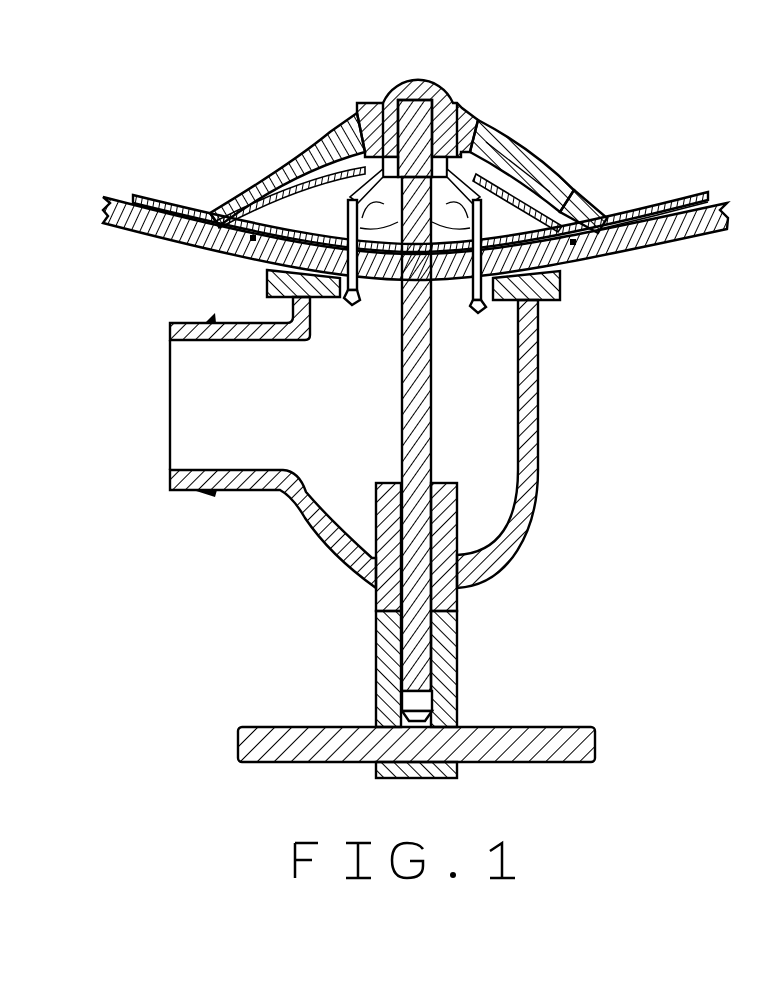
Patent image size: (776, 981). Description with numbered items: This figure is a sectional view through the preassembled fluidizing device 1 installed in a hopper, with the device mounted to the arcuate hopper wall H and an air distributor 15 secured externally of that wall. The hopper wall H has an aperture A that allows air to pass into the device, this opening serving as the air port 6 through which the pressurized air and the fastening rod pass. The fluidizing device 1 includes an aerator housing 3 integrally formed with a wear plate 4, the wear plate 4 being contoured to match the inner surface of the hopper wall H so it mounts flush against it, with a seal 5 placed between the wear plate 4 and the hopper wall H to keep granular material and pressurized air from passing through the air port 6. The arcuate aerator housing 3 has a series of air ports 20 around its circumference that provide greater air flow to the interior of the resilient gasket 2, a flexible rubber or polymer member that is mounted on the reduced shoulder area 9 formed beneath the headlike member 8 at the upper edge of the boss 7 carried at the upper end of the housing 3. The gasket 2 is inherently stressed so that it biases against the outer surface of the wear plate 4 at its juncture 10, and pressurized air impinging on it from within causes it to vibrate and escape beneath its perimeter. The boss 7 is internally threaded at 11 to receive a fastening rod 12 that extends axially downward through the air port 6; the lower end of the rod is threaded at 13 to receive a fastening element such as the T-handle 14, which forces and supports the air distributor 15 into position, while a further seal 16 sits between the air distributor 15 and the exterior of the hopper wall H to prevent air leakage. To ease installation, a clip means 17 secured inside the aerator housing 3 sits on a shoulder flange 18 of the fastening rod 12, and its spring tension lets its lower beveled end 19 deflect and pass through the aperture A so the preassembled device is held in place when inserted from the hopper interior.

The preassembled fluidizing device 1 is at (512, 80).
The resilient gasket 2 is at (540, 177).
The aerator housing 3 is at (567, 195).
The wear plate 4 is at (655, 207).
The seal 5 is at (695, 207).
The air port 6 is at (393, 251).
The boss 7 is at (477, 112).
The headlike member 8 is at (410, 80).
The reduced shoulder area 9 is at (360, 117).
The juncture 10 is at (208, 200).
The internal threads 11 is at (443, 90).
The fastening rod 12 is at (445, 412).
The threaded end 13 is at (450, 632).
The T-handle 14 is at (475, 685).
The air distributor 15 is at (550, 472).
The further seal 16 is at (560, 285).
The clip means 17 is at (472, 282).
The shoulder flange 18 is at (498, 150).
The lower beveled end 19 is at (484, 308).
The air ports 20 is at (330, 147).
The aperture A is at (381, 300).
The hopper wall H is at (713, 197).